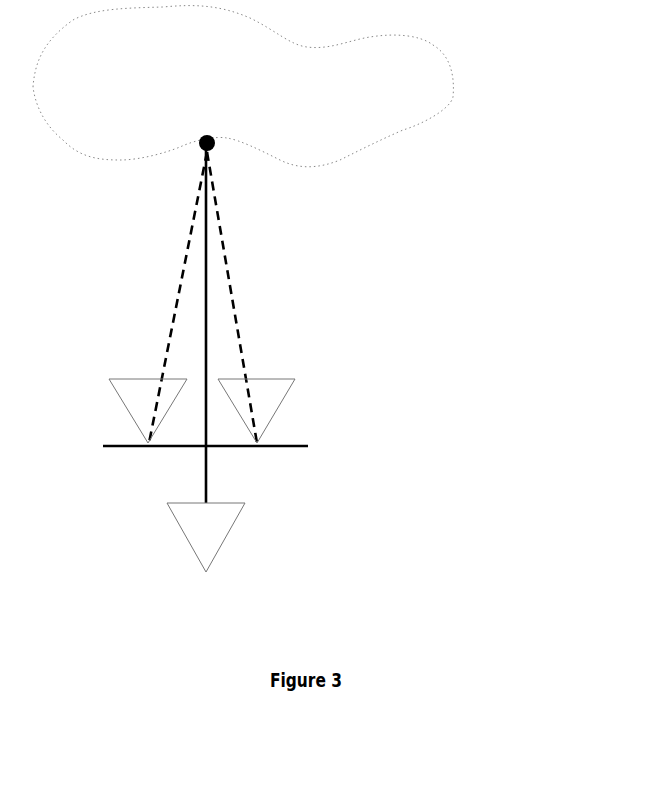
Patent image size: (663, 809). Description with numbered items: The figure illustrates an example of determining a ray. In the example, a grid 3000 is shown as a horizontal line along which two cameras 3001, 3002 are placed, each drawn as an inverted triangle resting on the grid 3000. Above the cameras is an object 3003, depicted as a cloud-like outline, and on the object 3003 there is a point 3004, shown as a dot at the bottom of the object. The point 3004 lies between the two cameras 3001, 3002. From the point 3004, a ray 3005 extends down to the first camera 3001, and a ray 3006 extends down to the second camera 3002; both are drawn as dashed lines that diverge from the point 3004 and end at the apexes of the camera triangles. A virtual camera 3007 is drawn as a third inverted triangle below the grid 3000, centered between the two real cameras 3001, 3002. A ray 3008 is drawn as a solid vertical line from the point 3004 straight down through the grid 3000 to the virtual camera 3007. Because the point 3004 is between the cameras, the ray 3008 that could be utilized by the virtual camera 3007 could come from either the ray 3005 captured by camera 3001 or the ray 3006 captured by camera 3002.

The grid 3000 is at (229, 447).
The camera 3001 is at (147, 400).
The camera 3002 is at (273, 403).
The object 3003 is at (243, 86).
The point 3004 is at (230, 156).
The ray 3005 is at (172, 288).
The ray 3006 is at (238, 282).
The virtual camera 3007 is at (212, 523).
The ray 3008 is at (195, 473).